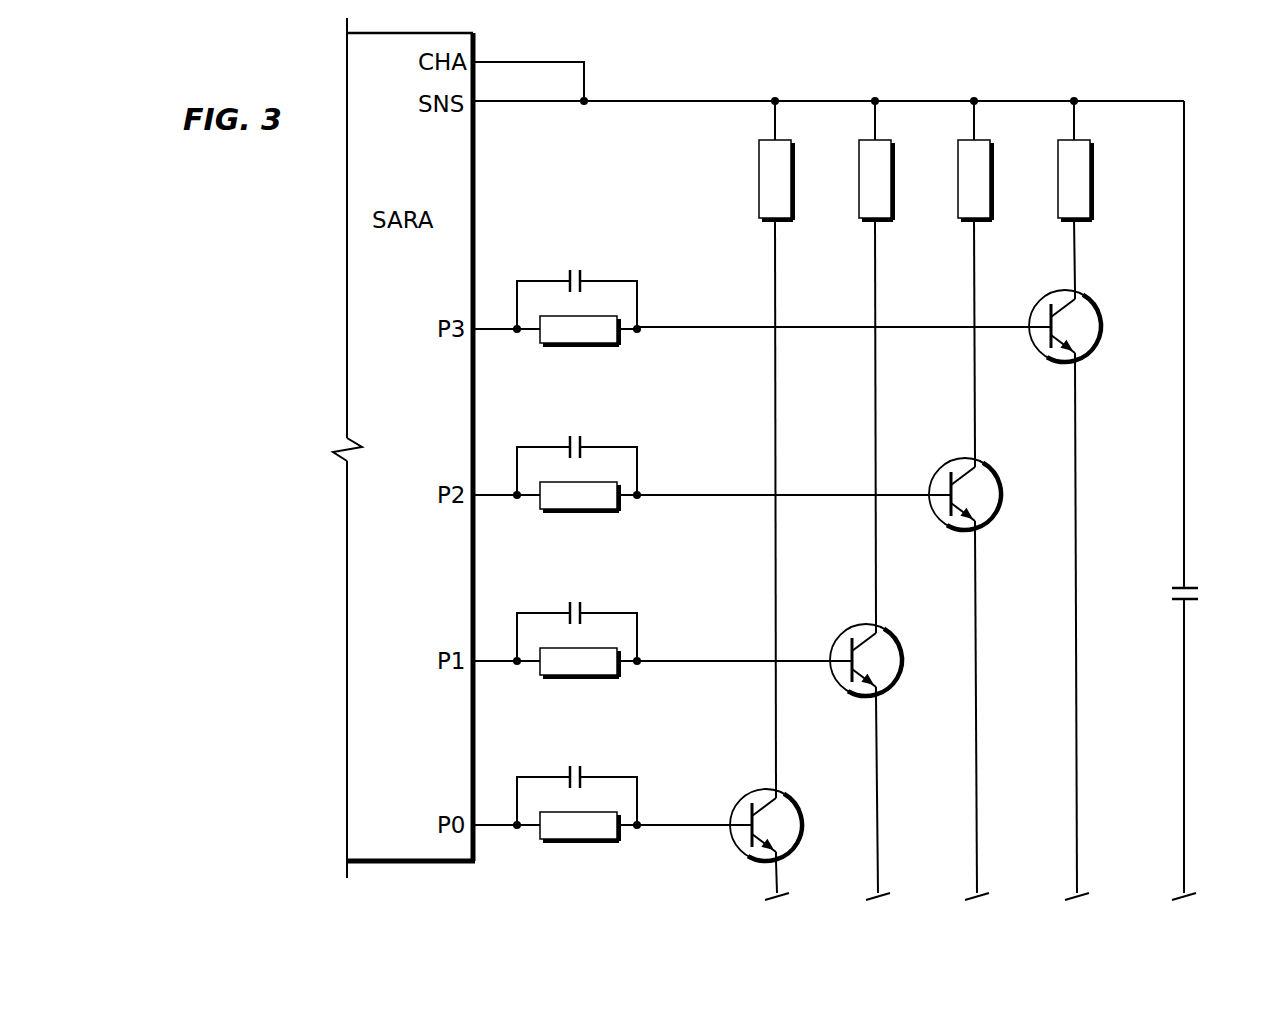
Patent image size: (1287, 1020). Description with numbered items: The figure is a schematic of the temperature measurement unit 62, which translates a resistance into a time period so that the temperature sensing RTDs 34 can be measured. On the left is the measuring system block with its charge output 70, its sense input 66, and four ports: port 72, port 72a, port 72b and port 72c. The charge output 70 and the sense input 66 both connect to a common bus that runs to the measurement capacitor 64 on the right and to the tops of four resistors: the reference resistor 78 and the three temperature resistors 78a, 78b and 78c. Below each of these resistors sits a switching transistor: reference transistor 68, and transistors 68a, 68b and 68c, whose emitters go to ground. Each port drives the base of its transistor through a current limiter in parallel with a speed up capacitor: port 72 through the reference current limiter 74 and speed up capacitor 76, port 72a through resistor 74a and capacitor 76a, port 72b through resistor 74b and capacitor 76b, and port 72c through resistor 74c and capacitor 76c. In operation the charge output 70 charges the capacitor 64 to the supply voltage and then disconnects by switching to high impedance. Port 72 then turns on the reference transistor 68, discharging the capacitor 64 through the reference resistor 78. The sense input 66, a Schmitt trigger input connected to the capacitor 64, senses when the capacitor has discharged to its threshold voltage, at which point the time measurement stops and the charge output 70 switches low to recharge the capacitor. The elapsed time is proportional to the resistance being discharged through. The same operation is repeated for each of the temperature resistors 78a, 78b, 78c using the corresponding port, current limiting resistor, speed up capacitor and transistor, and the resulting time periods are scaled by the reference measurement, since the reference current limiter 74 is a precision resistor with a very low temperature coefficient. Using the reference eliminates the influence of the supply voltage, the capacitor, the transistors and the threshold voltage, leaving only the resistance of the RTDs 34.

The RTD 34 is at (1108, 270).
The temperature measurement unit 62 is at (899, 58).
The capacitor C0 64 is at (1194, 587).
The SNS input 66 is at (533, 122).
The transistor QRef 68 is at (719, 844).
The transistor Q1 68a is at (769, 679).
The transistor Q2 68b is at (819, 513).
The transistor Q3 68c is at (869, 345).
The CHA output 70 is at (539, 62).
The port P0 72 is at (458, 806).
The port P1 72a is at (452, 681).
The port P2 72b is at (452, 515).
The port P3 72c is at (452, 349).
The current limiter RRef 74 is at (593, 841).
The resistor R1 74a is at (600, 677).
The resistor R2 74b is at (600, 511).
The resistor R3 74c is at (599, 345).
The speed up capacitor CRef 76 is at (580, 779).
The speed up capacitor C1 76a is at (588, 615).
The speed up capacitor C2 76b is at (588, 449).
The speed up capacitor C3 76c is at (587, 283).
The reference resistor RRef0 78 is at (785, 178).
The resistor RTmp1 78a is at (887, 178).
The resistor RTmp2 78b is at (986, 178).
The resistor RTmp3 78c is at (1086, 178).